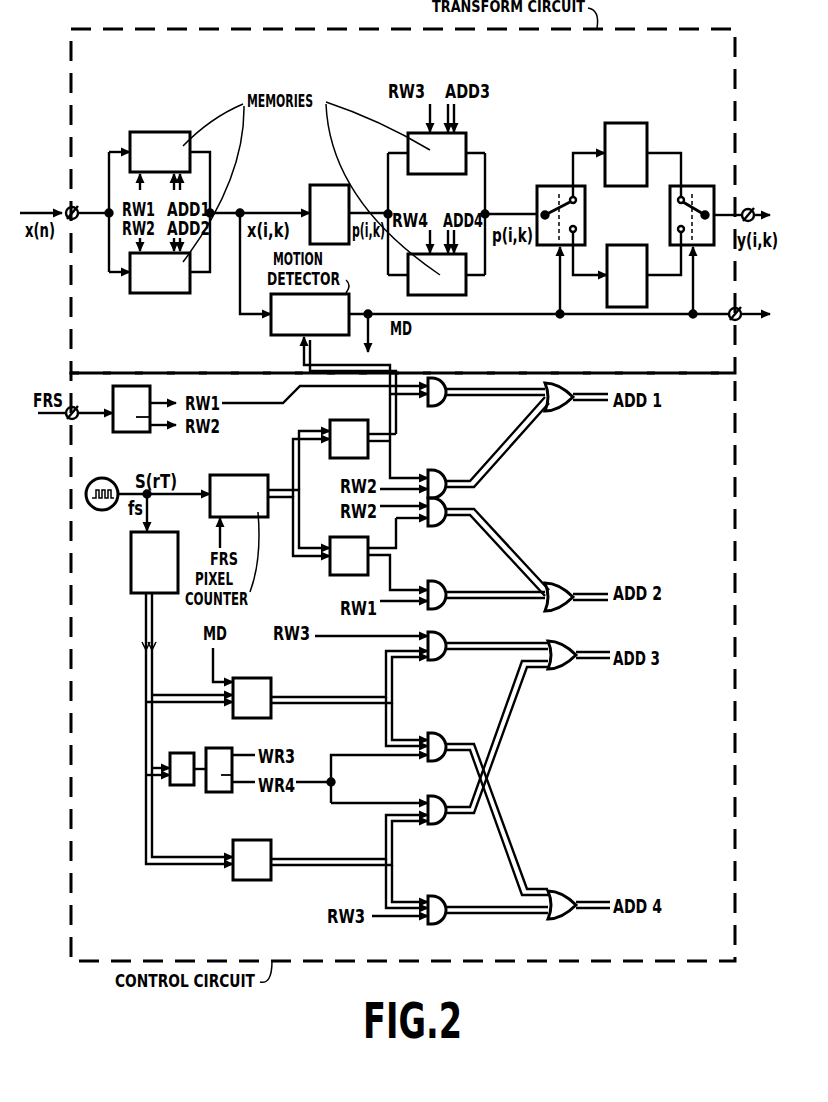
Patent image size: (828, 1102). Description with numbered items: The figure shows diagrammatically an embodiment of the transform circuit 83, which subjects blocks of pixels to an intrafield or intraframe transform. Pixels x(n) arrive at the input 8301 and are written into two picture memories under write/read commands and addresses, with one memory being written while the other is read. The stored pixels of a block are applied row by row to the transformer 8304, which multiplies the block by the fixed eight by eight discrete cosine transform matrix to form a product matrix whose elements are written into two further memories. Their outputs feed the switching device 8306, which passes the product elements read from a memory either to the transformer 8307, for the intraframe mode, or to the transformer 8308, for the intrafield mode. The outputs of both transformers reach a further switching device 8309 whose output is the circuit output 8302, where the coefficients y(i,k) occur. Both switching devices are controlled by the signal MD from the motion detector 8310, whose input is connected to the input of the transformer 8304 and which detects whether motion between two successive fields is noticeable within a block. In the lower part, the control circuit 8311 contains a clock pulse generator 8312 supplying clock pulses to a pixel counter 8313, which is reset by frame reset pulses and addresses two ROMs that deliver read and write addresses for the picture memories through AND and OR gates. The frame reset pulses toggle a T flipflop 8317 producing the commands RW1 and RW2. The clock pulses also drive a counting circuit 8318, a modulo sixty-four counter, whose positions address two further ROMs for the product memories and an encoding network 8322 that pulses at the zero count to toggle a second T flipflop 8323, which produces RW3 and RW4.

The transform circuit 83 is at (256, 28).
The input 8301 is at (71, 228).
The output 8302 is at (750, 208).
The transformer 8304 is at (322, 184).
The switching device 8306 is at (548, 185).
The transformer 8307 is at (640, 122).
The transformer 8308 is at (646, 289).
The further switching device 8309 is at (697, 185).
The motion detector 8310 is at (270, 328).
The control circuit 8311 is at (736, 493).
The clock pulse generator 8312 is at (98, 478).
The pixel counter 8313 is at (224, 475).
The T flipflop 8317 is at (135, 433).
The counting circuit 8318 is at (131, 556).
The encoding network 8322 is at (180, 786).
The T flipflop 8323 is at (214, 793).